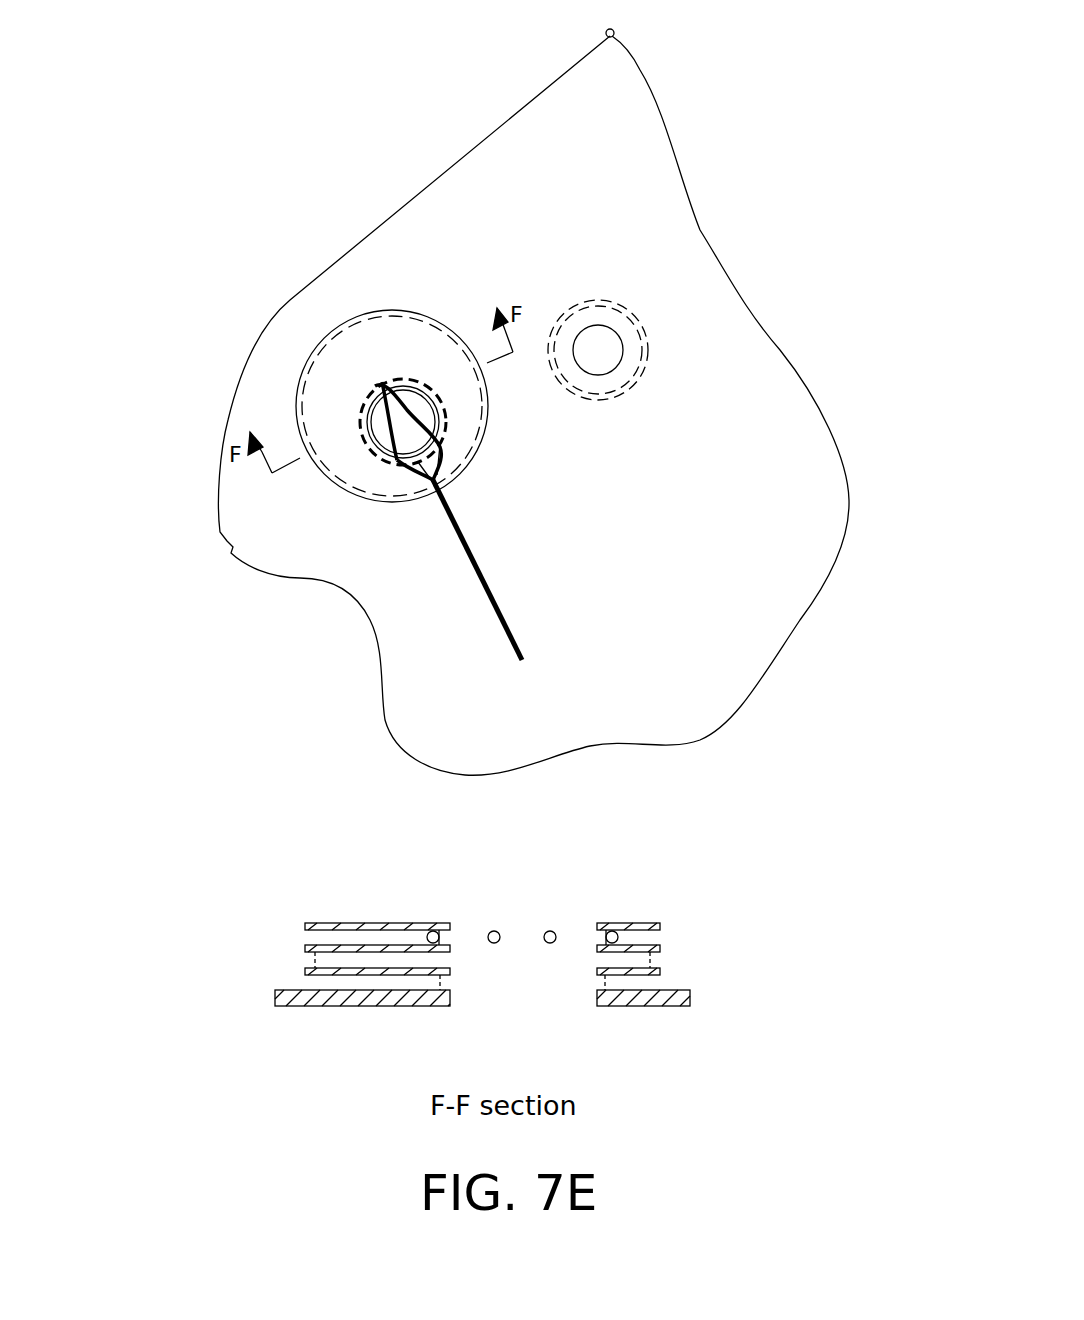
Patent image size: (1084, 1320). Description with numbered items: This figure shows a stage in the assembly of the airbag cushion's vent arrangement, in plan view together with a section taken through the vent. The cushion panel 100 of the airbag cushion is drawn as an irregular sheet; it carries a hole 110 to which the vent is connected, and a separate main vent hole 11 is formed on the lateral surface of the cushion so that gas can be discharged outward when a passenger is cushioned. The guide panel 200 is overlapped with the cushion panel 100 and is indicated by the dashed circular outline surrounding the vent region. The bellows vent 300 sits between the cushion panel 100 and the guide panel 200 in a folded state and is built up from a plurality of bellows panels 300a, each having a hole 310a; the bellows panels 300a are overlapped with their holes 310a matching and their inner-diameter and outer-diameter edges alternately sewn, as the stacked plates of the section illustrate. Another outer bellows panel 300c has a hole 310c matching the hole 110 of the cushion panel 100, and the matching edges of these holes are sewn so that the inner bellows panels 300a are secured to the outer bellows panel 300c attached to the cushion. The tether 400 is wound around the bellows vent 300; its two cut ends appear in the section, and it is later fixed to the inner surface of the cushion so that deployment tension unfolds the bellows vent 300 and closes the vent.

The cushion panel 100 is at (440, 197).
The main vent hole 11 is at (612, 343).
The guide panel 200 is at (318, 345).
The bellows vent 300 is at (313, 383).
The bellows panel 300a is at (377, 337).
The outer bellows panel 300c is at (363, 975).
The tether 400 is at (493, 608).
The hole 110 is at (596, 998).
The hole 310a is at (550, 918).
The hole 310c is at (628, 971).